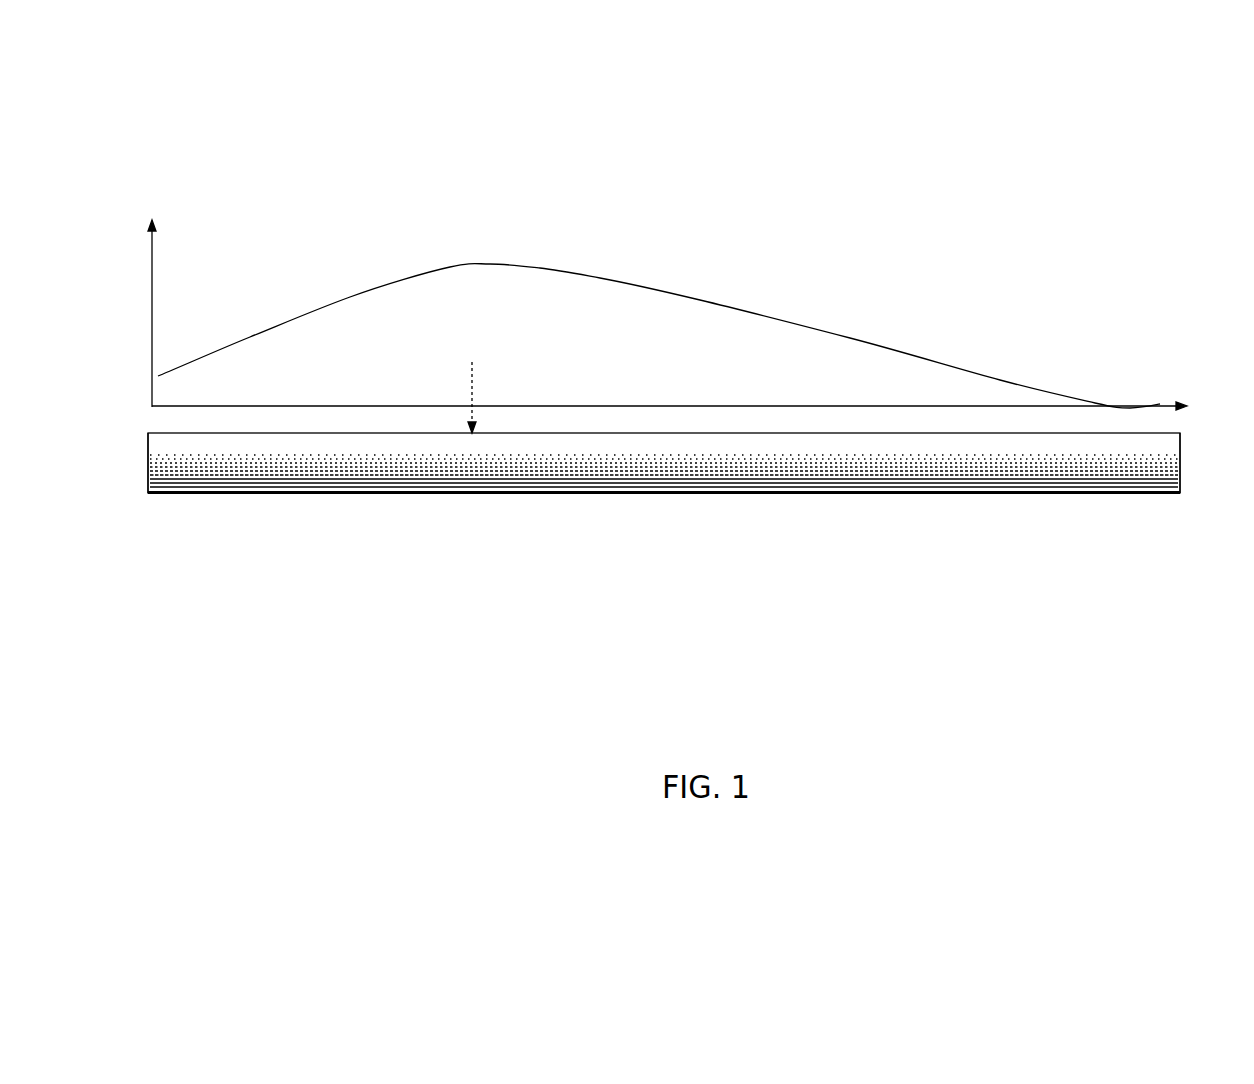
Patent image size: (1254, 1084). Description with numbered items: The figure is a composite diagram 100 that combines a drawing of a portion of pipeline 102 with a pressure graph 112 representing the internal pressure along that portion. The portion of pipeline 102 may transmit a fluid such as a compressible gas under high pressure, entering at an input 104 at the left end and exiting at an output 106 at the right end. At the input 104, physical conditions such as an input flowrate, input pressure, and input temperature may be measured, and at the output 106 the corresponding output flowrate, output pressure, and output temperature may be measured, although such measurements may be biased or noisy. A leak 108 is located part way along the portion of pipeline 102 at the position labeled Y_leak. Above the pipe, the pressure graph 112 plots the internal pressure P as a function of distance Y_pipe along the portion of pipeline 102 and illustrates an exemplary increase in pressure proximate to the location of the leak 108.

The composite diagram 100 is at (1048, 152).
The portion of pipeline 102 is at (805, 494).
The input 104 is at (148, 497).
The output 106 is at (1180, 503).
The leak 108 is at (472, 436).
The pressure graph 112 is at (297, 230).